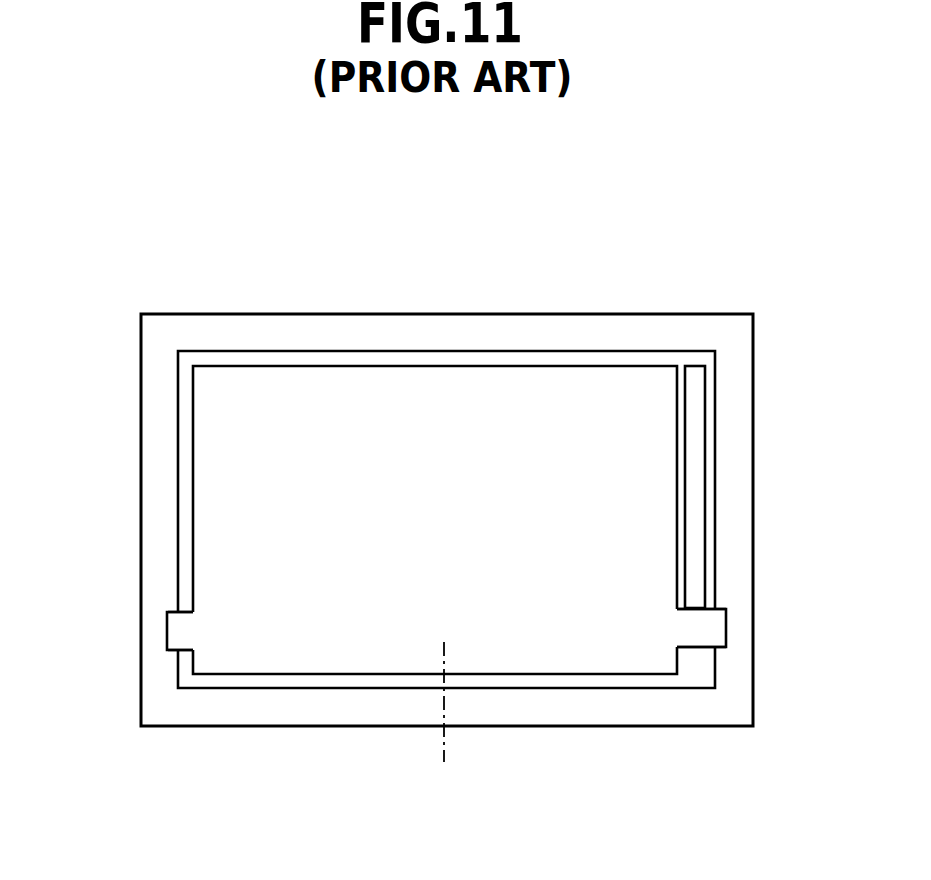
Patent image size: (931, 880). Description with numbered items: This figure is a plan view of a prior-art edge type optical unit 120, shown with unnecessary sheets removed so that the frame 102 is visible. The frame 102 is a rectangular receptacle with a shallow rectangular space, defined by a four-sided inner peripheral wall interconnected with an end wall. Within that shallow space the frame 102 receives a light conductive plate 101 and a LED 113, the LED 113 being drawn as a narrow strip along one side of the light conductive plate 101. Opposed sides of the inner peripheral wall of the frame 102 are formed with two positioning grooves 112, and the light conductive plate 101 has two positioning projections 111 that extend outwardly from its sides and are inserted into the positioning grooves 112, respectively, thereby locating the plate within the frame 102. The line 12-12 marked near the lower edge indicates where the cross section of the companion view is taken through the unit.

The optical unit 120 is at (384, 228).
The frame 102 is at (265, 314).
The light conductive plate 101 is at (432, 366).
The LED 113 is at (702, 518).
The positioning grooves 112 is at (176, 623).
The positioning projections 111 is at (173, 640).
The line 12- 12 is at (444, 642).